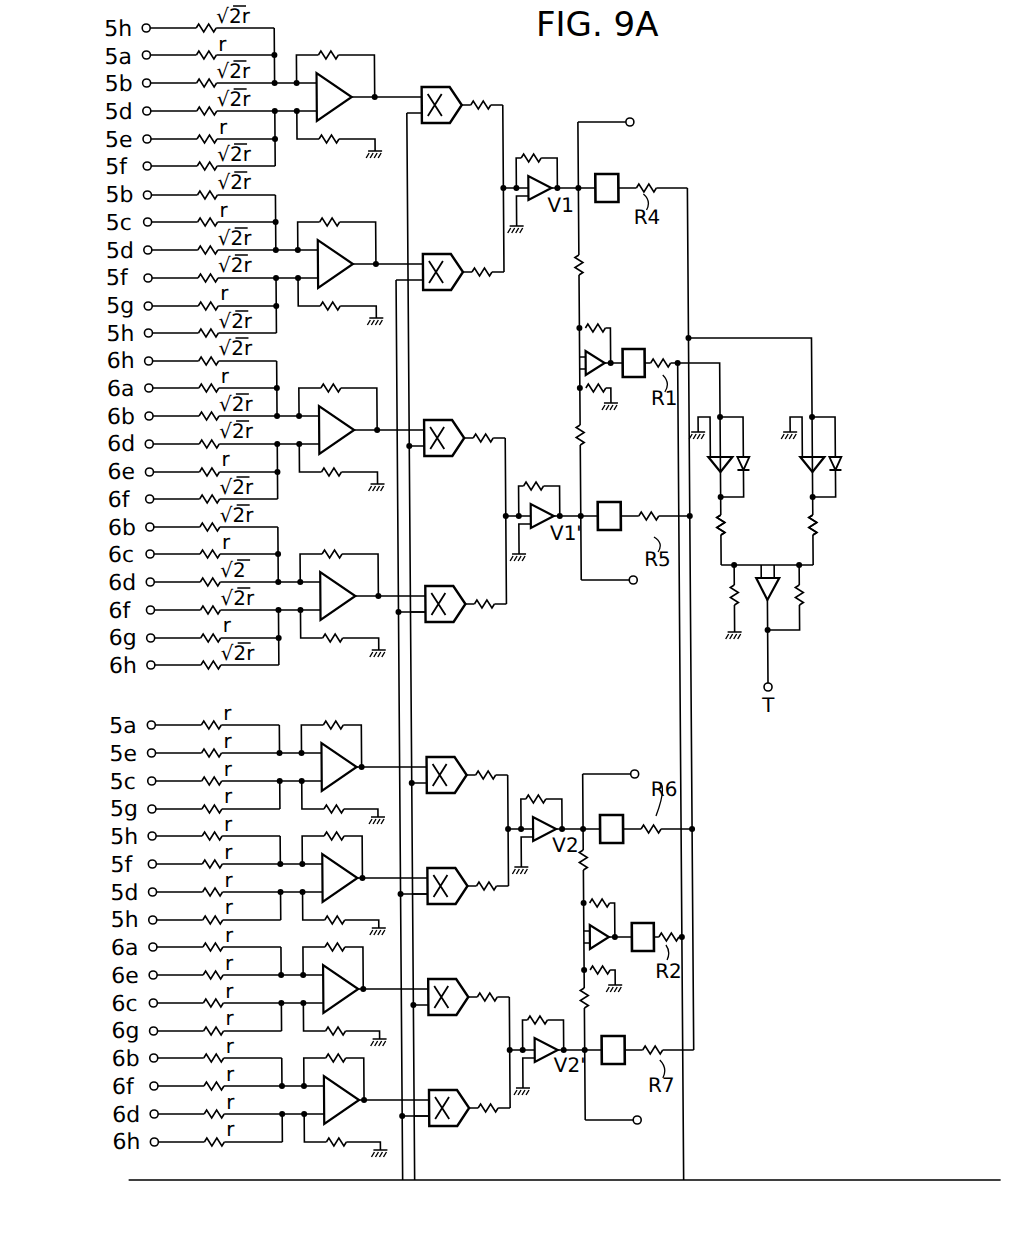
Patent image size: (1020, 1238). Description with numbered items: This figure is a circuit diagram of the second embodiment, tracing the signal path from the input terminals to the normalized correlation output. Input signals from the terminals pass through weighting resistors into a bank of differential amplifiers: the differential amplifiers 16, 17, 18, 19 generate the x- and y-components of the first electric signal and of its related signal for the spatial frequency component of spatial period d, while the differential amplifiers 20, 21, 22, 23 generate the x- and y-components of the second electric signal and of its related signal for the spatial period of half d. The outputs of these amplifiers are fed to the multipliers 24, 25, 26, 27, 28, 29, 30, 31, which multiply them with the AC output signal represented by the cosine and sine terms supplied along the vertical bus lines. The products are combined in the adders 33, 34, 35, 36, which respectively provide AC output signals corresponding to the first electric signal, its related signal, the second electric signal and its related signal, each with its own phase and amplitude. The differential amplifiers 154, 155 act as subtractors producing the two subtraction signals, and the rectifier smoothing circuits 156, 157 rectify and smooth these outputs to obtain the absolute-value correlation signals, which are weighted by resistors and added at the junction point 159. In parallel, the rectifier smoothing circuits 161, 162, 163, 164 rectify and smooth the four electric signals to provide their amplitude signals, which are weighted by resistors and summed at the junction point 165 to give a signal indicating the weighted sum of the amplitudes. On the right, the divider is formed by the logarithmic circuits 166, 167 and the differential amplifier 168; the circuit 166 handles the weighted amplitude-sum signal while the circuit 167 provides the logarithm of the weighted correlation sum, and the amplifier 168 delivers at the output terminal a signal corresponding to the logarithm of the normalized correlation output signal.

The differential amplifier 16 is at (384, 62).
The differential amplifier 17 is at (378, 212).
The differential amplifier 18 is at (374, 380).
The differential amplifier 19 is at (374, 550).
The differential amplifier 20 is at (372, 720).
The differential amplifier 21 is at (372, 872).
The differential amplifier 22 is at (372, 983).
The differential amplifier 23 is at (372, 1094).
The multiplier 24 is at (452, 124).
The multiplier 25 is at (452, 256).
The multiplier 26 is at (452, 458).
The multiplier 27 is at (452, 588).
The multiplier 28 is at (456, 758).
The multiplier 29 is at (458, 869).
The multiplier 30 is at (458, 980).
The multiplier 31 is at (458, 1092).
The adder 33 is at (543, 160).
The adder 34 is at (543, 489).
The adder 35 is at (545, 801).
The adder 36 is at (543, 1021).
The differential amplifier 154 is at (597, 322).
The differential amplifier 155 is at (600, 900).
The rectifier smoothing circuit 156 is at (630, 348).
The rectifier smoothing circuit 157 is at (636, 922).
The junction point 159 is at (668, 362).
The rectifier smoothing circuit 161 is at (628, 181).
The rectifier smoothing circuit 162 is at (606, 502).
The rectifier smoothing circuit 163 is at (610, 815).
The rectifier smoothing circuit 164 is at (625, 1036).
The junction point 165 is at (689, 338).
The logarithmic circuit 166 is at (813, 513).
The logarithmic circuit 167 is at (722, 512).
The differential amplifier 168 is at (772, 645).